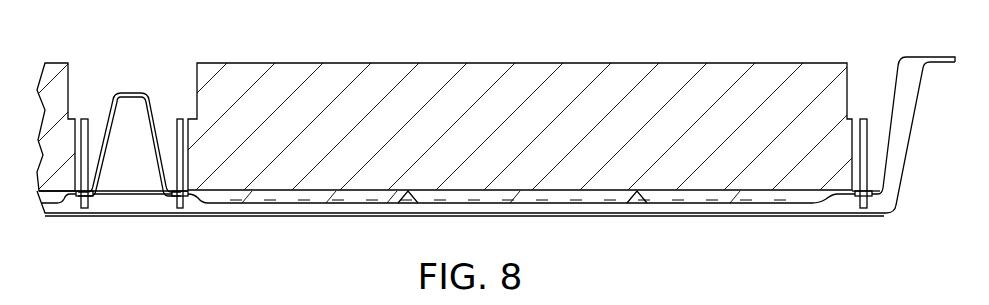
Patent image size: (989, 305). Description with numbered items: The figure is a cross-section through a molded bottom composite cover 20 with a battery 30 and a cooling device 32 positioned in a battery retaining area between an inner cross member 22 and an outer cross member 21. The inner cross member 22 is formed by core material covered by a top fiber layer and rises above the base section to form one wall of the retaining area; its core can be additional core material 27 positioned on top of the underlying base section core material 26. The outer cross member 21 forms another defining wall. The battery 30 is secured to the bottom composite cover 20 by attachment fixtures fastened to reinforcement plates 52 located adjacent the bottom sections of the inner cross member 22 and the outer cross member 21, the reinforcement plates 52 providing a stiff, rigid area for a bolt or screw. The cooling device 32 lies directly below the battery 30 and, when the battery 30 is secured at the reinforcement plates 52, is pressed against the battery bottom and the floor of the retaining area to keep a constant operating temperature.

The bottom composite cover 20 is at (888, 216).
The outer cross member 21 is at (918, 93).
The inner cross member 22 is at (132, 91).
The base section core material 26 is at (123, 207).
The additional core material 27 is at (117, 111).
The battery 30 is at (534, 74).
The cooling device 32 is at (372, 200).
The reinforcement plate 52 is at (183, 209).